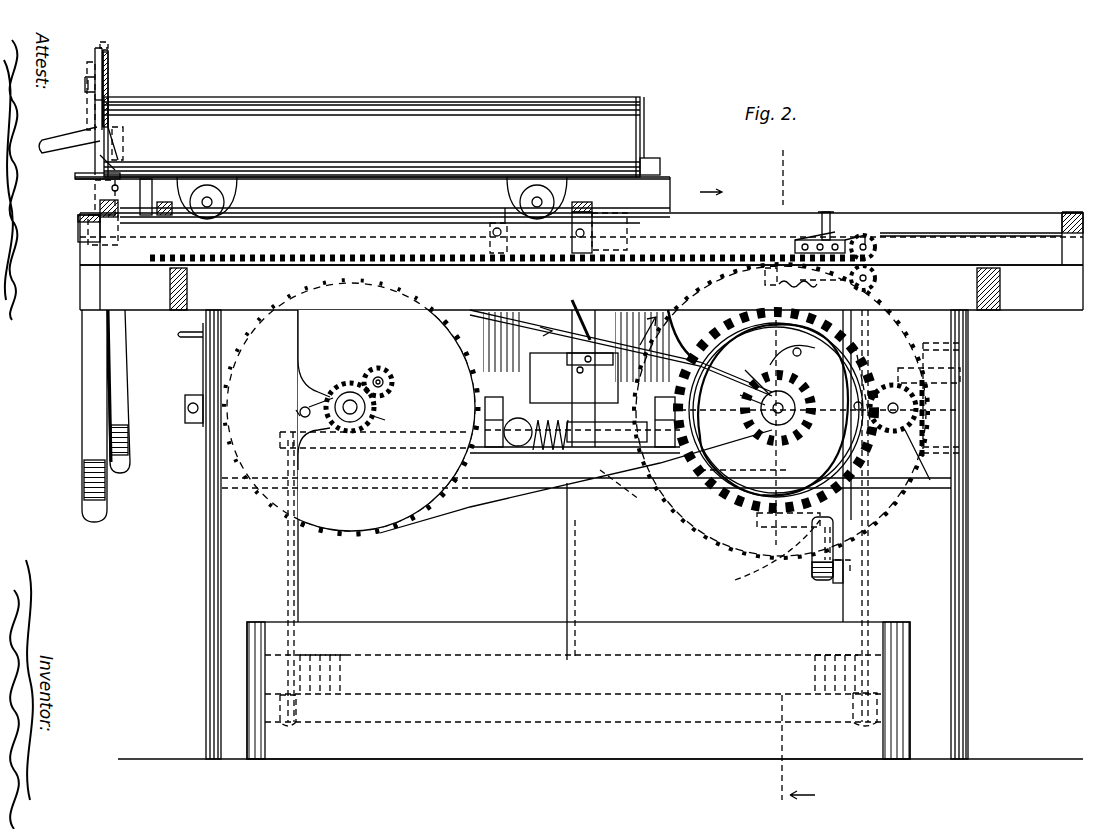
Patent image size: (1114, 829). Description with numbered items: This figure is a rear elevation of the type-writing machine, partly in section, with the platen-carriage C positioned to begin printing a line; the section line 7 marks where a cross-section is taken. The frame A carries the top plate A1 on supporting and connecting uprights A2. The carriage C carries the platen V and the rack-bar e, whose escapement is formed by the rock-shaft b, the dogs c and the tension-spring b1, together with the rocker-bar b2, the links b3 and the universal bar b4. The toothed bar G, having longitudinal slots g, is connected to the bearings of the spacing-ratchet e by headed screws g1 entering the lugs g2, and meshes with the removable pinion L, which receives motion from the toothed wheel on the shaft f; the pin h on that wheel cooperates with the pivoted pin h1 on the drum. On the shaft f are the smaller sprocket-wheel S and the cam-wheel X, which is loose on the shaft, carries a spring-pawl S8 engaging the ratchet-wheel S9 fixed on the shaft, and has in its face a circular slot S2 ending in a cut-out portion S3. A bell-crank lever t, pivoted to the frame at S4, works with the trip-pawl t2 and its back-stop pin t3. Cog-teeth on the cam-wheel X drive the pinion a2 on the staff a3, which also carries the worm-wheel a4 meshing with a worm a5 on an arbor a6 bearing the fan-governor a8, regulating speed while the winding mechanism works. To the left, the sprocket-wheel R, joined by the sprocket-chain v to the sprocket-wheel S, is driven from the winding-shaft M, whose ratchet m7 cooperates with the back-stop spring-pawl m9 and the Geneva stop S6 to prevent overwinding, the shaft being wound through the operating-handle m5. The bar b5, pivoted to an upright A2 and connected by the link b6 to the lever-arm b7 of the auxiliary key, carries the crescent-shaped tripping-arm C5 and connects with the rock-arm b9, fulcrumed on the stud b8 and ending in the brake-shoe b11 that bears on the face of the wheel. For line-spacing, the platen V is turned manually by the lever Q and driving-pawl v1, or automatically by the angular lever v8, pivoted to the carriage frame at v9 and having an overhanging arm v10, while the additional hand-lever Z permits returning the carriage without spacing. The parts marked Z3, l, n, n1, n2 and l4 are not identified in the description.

The section line 7 is at (786, 463).
The frame A is at (520, 615).
The top plate A1 is at (977, 300).
The uprights A2 is at (968, 555).
The carriage-platen V is at (372, 138).
The platen-carriage C is at (395, 200).
The toothed bar G is at (581, 239).
The hand-lever Z is at (128, 430).
The lever pin Z3 is at (98, 48).
The lever Q is at (82, 462).
The driving-pawl v1 is at (95, 100).
The angular lever v8 is at (112, 165).
The pivot v9 is at (112, 188).
The overhanging arm v10 is at (64, 154).
The rack-bar e is at (116, 233).
The longitudinal slots g is at (700, 195).
The headed screws g1 is at (575, 235).
The lugs g2 is at (582, 200).
The stop l is at (609, 233).
The trip-pawl t2 is at (490, 245).
The back-stop pin t3 is at (505, 210).
The pin h is at (765, 265).
The pivoted pin h1 is at (775, 265).
The pinion n is at (878, 250).
The pinion bracket n1 is at (860, 238).
The adjusting bracket n2 is at (820, 235).
The lower pinion l4 is at (848, 285).
The pinion L is at (850, 284).
The sprocket-wheel R is at (351, 407).
The winding-shaft M is at (348, 400).
The Geneva stop S6 is at (394, 384).
The back-stop spring-pawl m9 is at (310, 408).
The ratchet m7 is at (386, 420).
The operating-handle m5 is at (205, 362).
The rocker-bar b2 is at (452, 450).
The links b3 is at (885, 570).
The sprocket-chain v is at (520, 495).
The dogs c is at (590, 322).
The tension-spring b1 is at (530, 450).
The rock-shaft b is at (610, 442).
The bar b5 is at (650, 487).
The link b6 is at (567, 560).
The lever-arm b7 is at (689, 671).
The universal bar b4 is at (391, 674).
The stud b8 is at (814, 584).
The rock-arm b9 is at (851, 525).
The brake-shoe b11 is at (812, 560).
The tripping-arm C5 is at (771, 554).
The cam-wheel X is at (797, 412).
The sprocket-wheel S is at (762, 415).
The bell-crank lever t is at (812, 360).
The spring-pawl S8 is at (785, 358).
The ratchet-wheel S9 is at (734, 403).
The arbor f is at (735, 382).
The slot S2 is at (745, 468).
The cut-out portion S3 is at (846, 403).
The pivot S4 is at (865, 352).
The staff a3 is at (913, 410).
The worm a5 is at (905, 405).
The arbor a6 is at (925, 345).
The fan-governor a8 is at (945, 372).
The pinion a2 is at (900, 425).
The worm-wheel a4 is at (923, 464).